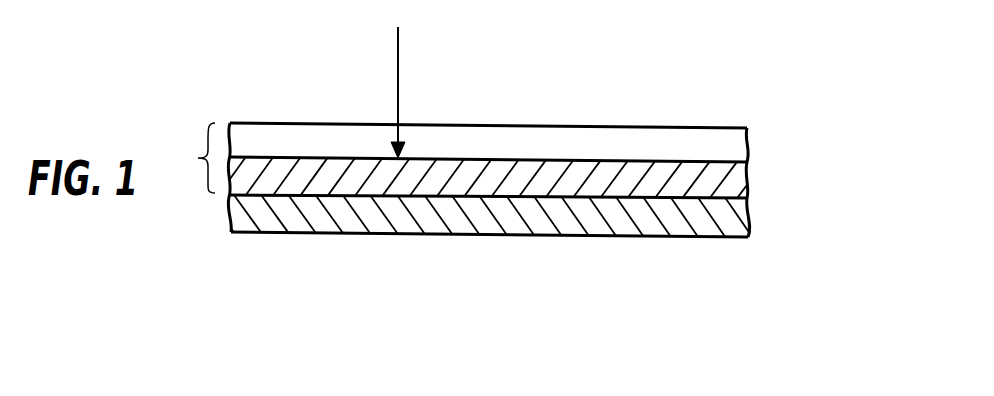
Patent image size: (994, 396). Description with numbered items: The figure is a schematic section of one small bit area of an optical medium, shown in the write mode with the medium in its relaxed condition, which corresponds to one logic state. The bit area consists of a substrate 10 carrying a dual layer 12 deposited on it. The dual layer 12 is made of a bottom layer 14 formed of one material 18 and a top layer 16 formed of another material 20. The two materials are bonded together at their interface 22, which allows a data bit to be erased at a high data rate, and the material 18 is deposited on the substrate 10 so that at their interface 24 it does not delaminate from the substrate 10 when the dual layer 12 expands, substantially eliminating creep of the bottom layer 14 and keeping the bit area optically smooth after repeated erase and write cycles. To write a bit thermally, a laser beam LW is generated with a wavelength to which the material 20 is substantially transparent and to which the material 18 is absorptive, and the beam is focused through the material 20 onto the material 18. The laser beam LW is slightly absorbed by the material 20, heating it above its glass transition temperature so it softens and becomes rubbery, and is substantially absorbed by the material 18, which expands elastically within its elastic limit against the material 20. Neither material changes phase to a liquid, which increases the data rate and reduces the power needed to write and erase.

The substrate 10 is at (235, 221).
The dual layer 12 is at (189, 158).
The bottom layer 14 is at (752, 194).
The top layer 16 is at (693, 127).
The material 18 is at (735, 178).
The material 20 is at (735, 140).
The interface 22 is at (752, 161).
The interface 24 is at (751, 203).
The laser beam LW is at (399, 45).